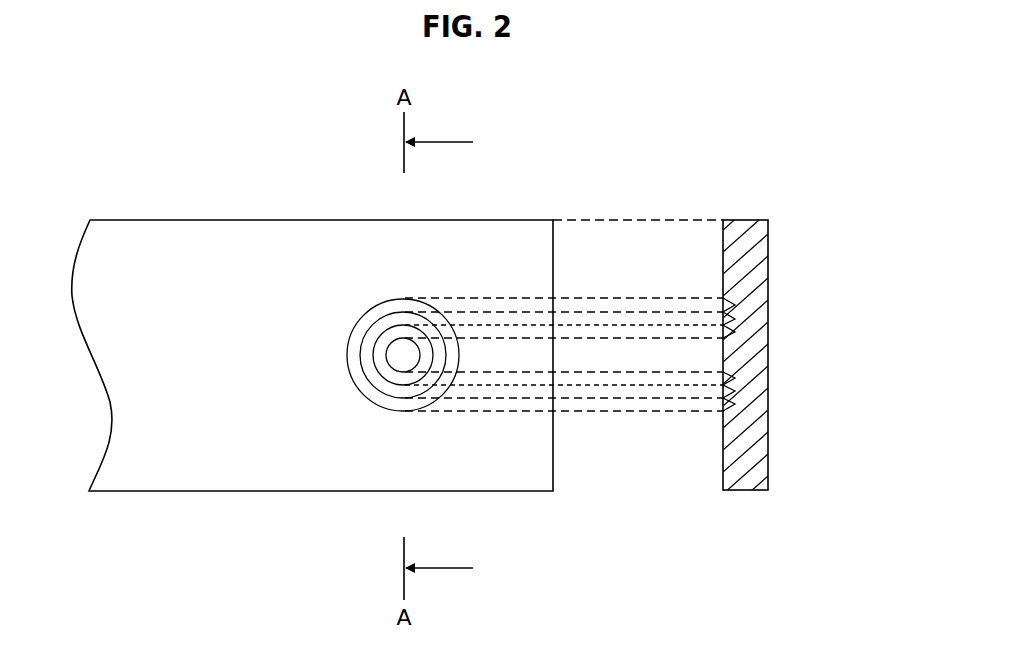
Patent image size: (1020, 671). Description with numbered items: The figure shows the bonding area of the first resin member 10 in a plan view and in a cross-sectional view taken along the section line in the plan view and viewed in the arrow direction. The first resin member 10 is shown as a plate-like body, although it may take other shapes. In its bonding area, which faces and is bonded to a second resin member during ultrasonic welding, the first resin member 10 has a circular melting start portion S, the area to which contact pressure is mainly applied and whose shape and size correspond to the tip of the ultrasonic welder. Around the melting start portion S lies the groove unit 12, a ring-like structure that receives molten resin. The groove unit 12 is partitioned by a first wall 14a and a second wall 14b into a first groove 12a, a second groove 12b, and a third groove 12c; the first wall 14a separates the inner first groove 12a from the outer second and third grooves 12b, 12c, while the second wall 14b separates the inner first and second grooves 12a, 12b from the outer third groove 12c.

The first resin member 10 is at (205, 226).
The groove unit 12 is at (381, 290).
The first groove 12a is at (388, 370).
The second groove 12b is at (366, 359).
The third groove 12c is at (358, 330).
The first wall 14a is at (430, 310).
The second wall 14b is at (396, 300).
The melting start portion S is at (404, 362).